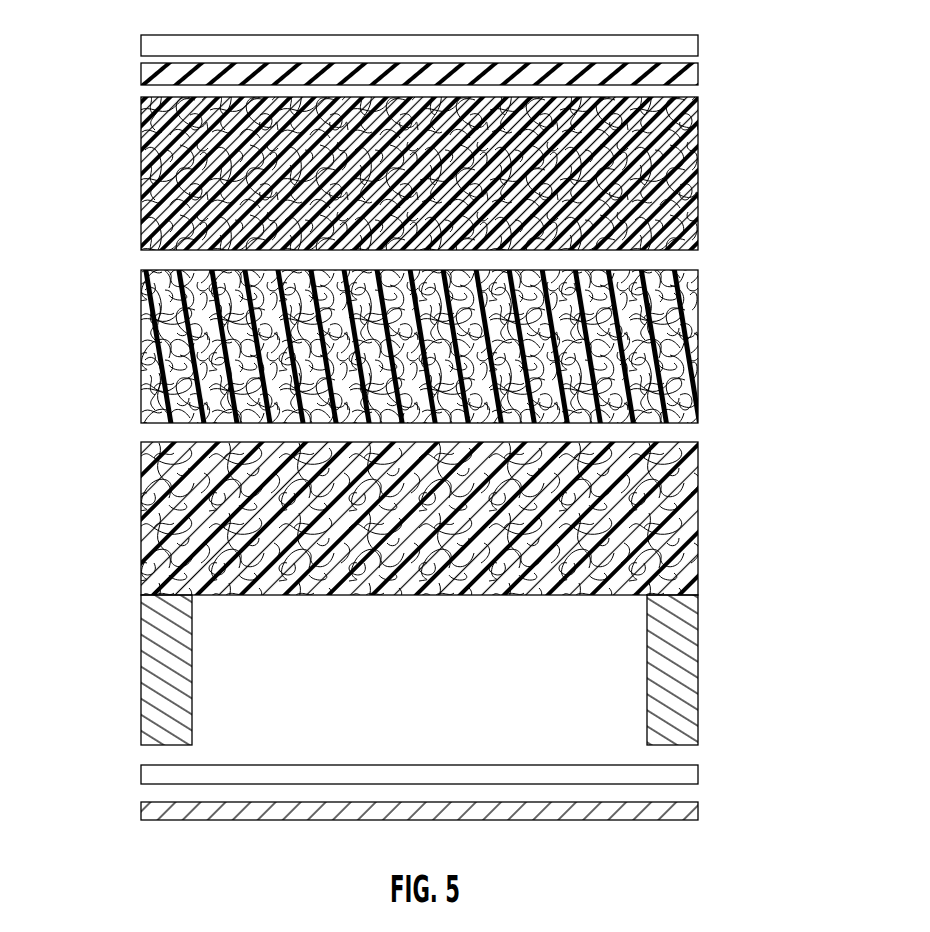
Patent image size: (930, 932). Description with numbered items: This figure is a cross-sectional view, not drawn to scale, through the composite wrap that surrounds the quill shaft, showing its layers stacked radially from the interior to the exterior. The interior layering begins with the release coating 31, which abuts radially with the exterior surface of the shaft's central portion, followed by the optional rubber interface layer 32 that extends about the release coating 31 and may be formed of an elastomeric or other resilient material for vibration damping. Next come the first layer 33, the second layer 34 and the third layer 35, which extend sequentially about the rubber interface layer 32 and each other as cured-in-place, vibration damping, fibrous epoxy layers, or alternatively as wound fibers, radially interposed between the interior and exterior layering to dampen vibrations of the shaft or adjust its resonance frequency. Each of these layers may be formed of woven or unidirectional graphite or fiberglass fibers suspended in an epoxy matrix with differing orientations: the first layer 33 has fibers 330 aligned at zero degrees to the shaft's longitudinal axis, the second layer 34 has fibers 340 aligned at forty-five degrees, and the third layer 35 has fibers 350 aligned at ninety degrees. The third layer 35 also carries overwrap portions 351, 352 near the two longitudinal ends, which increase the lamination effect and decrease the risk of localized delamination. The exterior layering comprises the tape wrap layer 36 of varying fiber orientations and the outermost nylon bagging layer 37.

The release coating 31 is at (141, 48).
The rubber interface layer 32 is at (141, 83).
The first layer 33 is at (141, 172).
The fibers 330 is at (698, 148).
The second layer 34 is at (141, 343).
The fibers 340 is at (698, 332).
The third layer 35 is at (141, 500).
The fibers 350 is at (698, 540).
The overwrap portion 351 is at (141, 660).
The overwrap portion 352 is at (647, 667).
The tape wrap layer 36 is at (141, 777).
The nylon bagging layer 37 is at (141, 817).